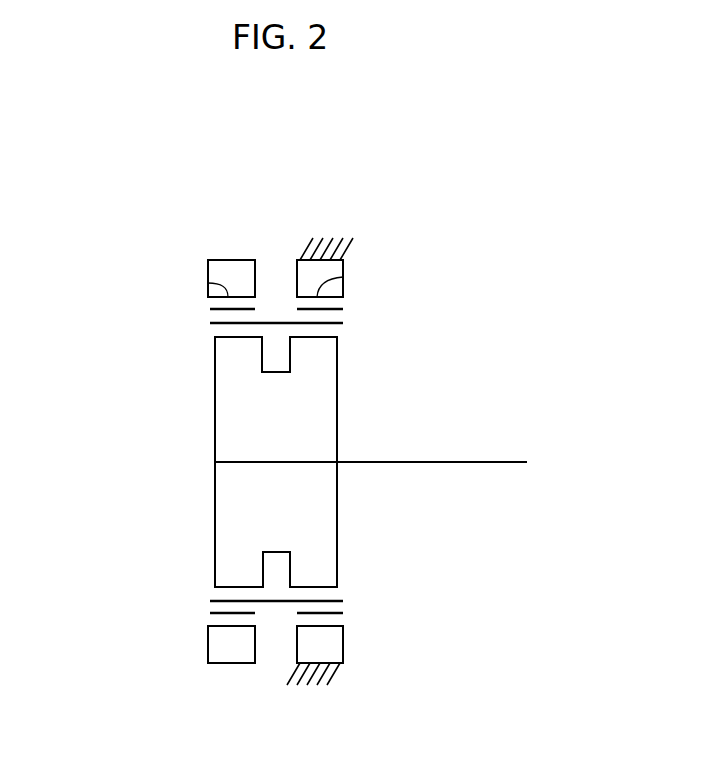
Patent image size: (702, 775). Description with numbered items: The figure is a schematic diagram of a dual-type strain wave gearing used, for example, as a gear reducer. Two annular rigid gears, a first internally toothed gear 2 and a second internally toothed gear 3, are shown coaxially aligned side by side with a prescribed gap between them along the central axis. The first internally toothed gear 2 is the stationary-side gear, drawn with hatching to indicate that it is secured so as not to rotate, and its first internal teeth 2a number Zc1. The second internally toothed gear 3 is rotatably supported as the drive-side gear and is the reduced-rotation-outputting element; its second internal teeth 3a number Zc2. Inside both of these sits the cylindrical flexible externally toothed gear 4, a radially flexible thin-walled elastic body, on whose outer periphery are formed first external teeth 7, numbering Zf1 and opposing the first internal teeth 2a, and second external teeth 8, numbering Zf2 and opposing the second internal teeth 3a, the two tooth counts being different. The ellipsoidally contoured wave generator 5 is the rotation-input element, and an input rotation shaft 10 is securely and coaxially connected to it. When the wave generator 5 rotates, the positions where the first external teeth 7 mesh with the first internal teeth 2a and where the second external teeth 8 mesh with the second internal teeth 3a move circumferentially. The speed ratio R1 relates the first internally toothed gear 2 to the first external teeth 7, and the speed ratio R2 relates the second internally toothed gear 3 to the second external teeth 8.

The first internally toothed gear 2 is at (343, 267).
The first internal teeth 2a is at (343, 277).
The second internally toothed gear 3 is at (205, 264).
The second internal teeth 3a is at (208, 283).
The flexible externally toothed gear 4 is at (238, 337).
The wave generator 5 is at (238, 505).
The first external teeth 7 is at (330, 310).
The second external teeth 8 is at (220, 310).
The input rotation shaft 10 is at (408, 465).
The speed ratio R1 is at (352, 306).
The speed ratio R2 is at (205, 307).